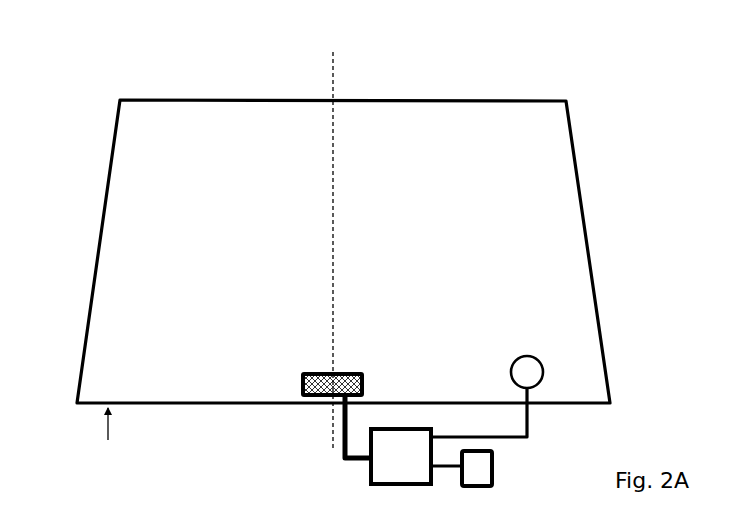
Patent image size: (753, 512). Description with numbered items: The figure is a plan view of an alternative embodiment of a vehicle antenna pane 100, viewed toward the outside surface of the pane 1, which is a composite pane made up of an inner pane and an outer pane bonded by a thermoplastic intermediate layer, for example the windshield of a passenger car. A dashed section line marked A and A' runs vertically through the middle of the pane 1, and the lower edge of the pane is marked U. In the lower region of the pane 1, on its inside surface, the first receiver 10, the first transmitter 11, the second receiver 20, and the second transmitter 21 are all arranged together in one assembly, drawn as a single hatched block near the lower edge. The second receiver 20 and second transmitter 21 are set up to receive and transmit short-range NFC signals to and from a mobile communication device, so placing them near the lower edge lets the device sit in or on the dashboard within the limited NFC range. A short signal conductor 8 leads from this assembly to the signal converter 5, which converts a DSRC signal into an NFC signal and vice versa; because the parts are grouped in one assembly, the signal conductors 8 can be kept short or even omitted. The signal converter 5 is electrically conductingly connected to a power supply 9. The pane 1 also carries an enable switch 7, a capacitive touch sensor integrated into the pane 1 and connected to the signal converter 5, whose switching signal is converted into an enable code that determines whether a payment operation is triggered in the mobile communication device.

The vehicle antenna pane 100 is at (112, 84).
The pane 1 is at (131, 158).
The first receiver 10 is at (269, 438).
The first transmitter 11 is at (269, 438).
The second receiver 20 is at (269, 438).
The second transmitter 21 is at (300, 393).
The signal conductor 8 is at (350, 461).
The signal converter 5 is at (401, 456).
The power supply 9 is at (462, 468).
The enable switch 7 is at (545, 370).